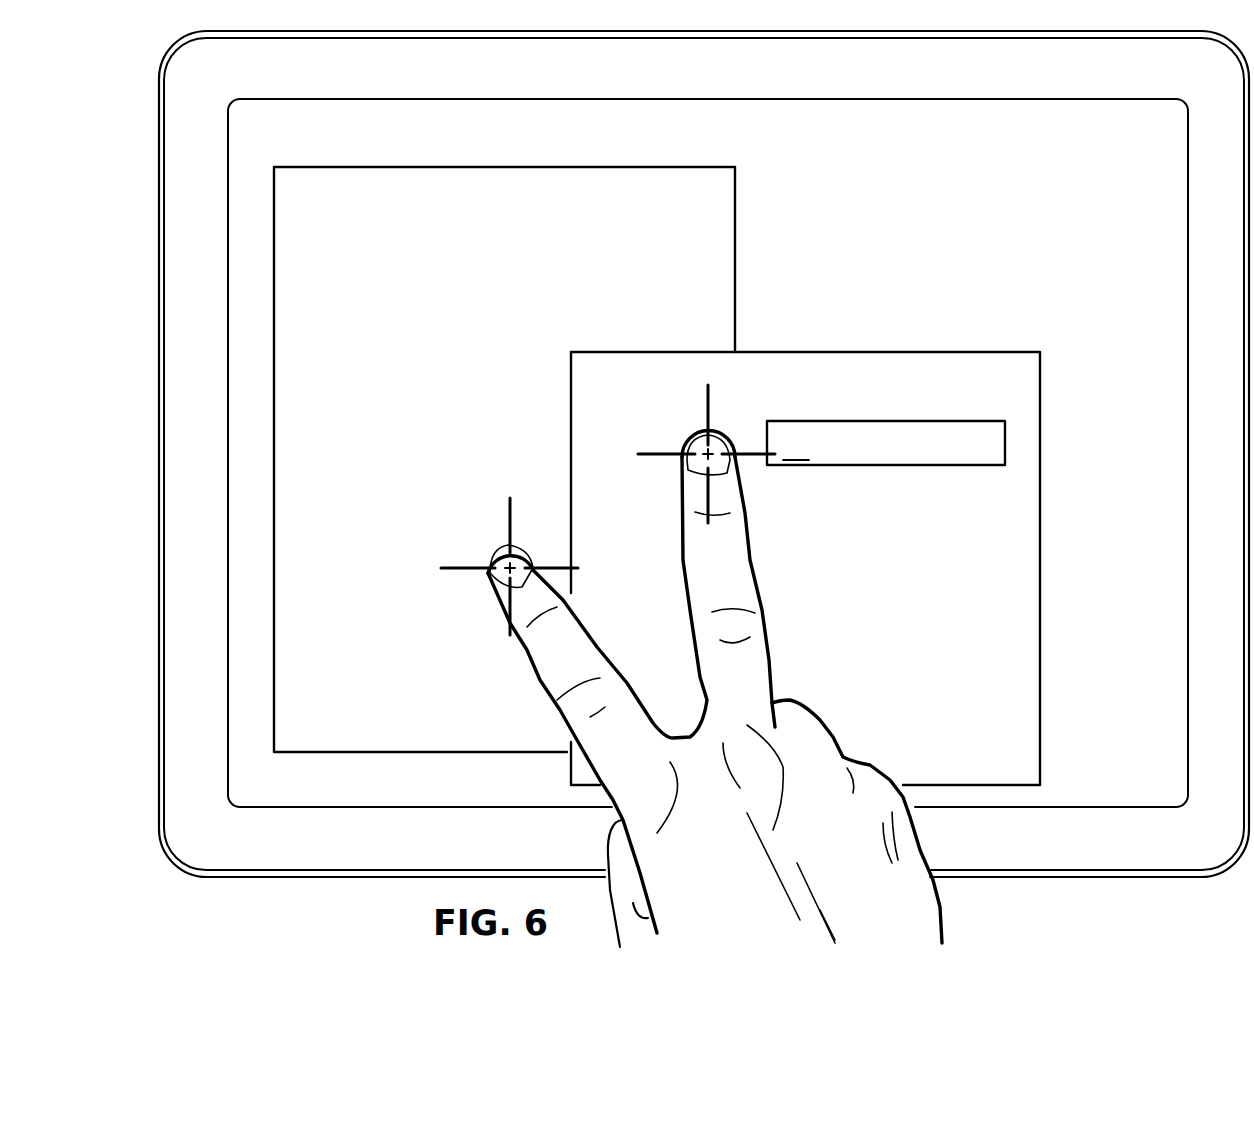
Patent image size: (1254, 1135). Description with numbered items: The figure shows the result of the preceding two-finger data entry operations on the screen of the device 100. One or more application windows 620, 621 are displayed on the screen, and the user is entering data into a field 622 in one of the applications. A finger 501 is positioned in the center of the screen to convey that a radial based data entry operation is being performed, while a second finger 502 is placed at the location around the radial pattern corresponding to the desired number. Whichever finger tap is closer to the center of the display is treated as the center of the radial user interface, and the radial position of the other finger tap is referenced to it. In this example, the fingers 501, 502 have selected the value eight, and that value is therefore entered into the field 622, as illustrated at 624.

The device 100 is at (158, 181).
The application window 620 is at (525, 321).
The application window 621 is at (878, 353).
The field 622 is at (892, 428).
The entered value 624 is at (810, 443).
The finger 501 is at (700, 446).
The second finger 502 is at (500, 560).